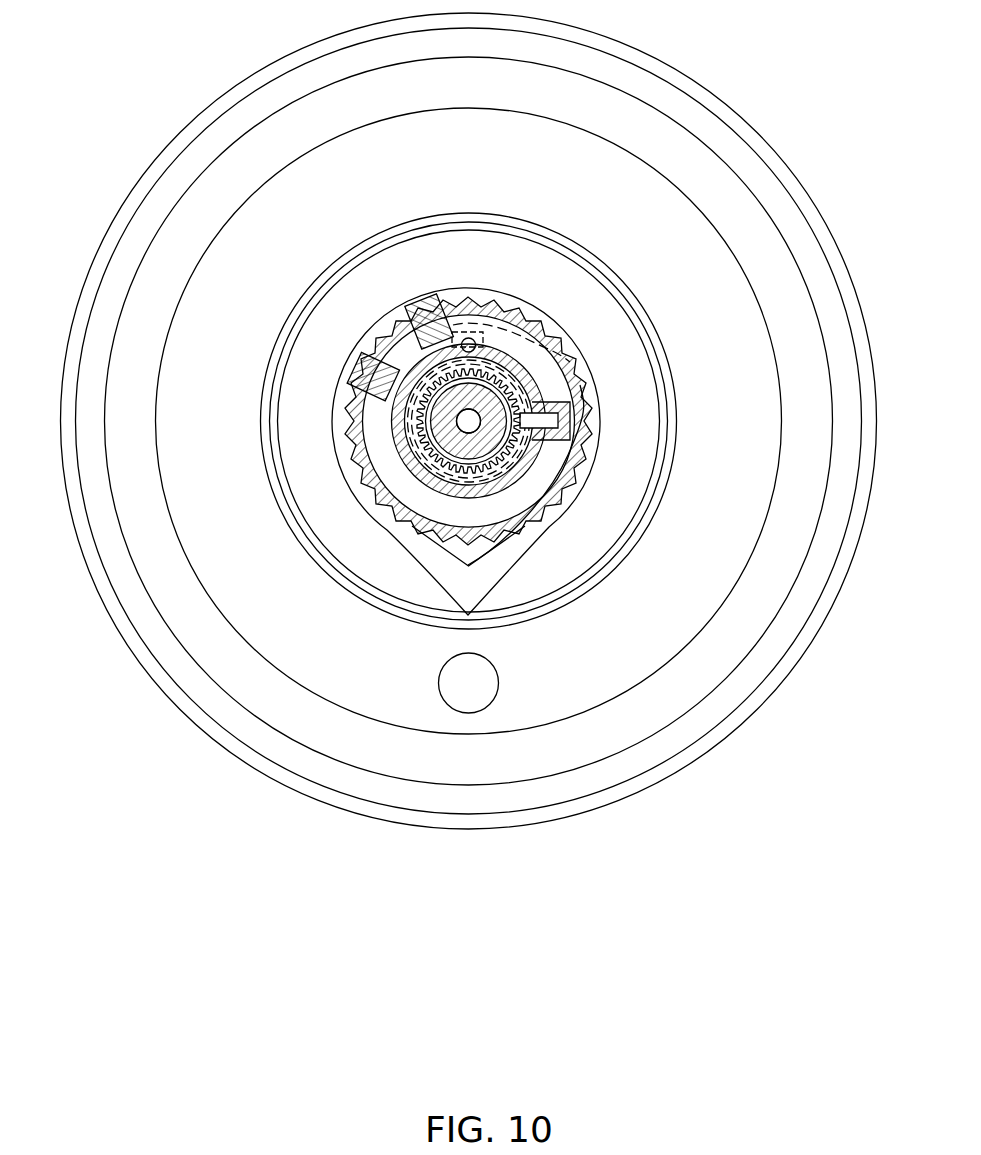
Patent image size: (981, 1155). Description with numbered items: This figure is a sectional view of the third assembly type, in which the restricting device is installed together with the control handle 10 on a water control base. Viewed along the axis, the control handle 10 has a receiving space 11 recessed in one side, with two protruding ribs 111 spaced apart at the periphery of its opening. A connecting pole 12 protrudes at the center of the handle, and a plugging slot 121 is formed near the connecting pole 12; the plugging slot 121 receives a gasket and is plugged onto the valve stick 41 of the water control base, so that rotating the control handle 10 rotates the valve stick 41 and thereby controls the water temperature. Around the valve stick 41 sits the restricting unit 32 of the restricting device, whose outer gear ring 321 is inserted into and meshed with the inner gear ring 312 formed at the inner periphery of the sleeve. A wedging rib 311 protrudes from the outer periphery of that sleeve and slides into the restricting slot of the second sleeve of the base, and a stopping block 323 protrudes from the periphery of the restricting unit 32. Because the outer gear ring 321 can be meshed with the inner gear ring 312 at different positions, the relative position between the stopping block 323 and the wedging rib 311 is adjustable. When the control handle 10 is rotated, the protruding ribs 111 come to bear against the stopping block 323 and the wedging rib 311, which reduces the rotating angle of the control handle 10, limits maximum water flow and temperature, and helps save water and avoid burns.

The control handle 10 is at (387, 520).
The receiving space 11 is at (383, 430).
The protruding ribs 111 is at (412, 312).
The connecting pole 12 is at (542, 372).
The plugging slot 121 is at (462, 416).
The restricting unit 32 is at (492, 445).
The wedging rib 311 is at (483, 337).
The inner gear ring 312 is at (483, 342).
The outer gear ring 321 is at (490, 343).
The stopping block 323 is at (570, 417).
The valve stick 41 is at (578, 438).